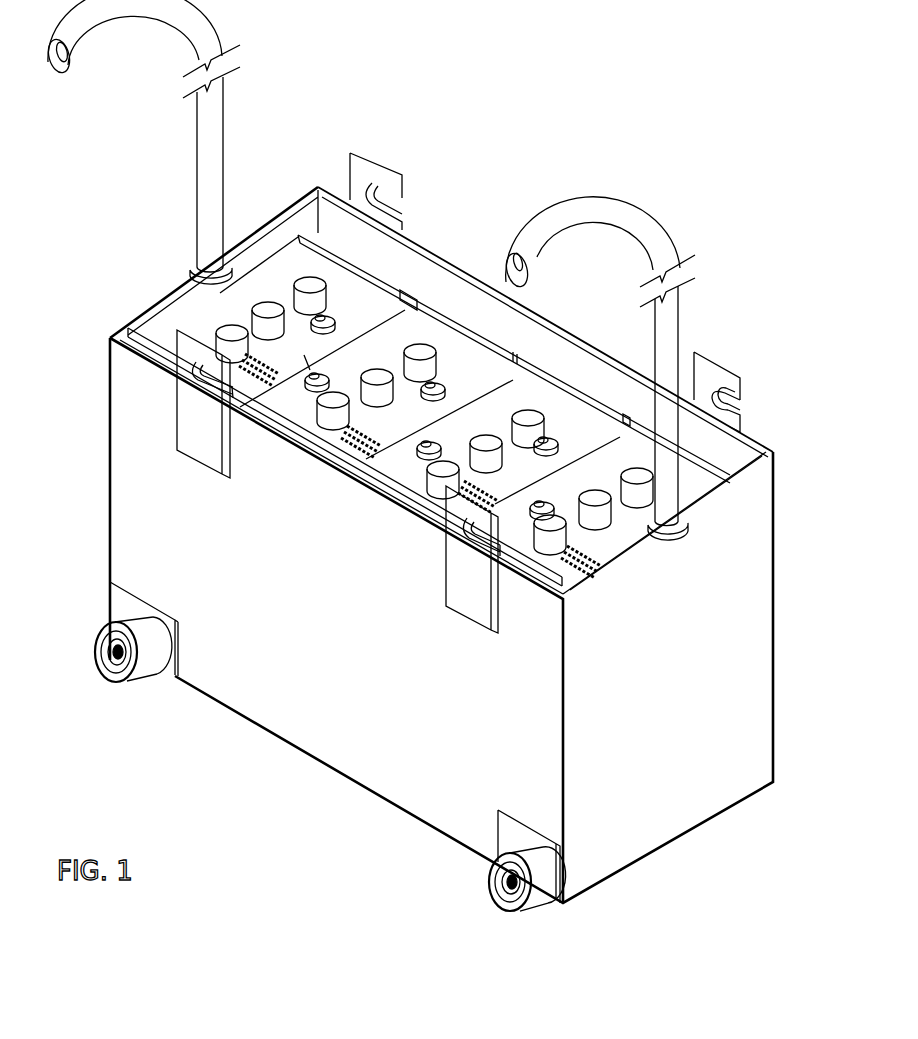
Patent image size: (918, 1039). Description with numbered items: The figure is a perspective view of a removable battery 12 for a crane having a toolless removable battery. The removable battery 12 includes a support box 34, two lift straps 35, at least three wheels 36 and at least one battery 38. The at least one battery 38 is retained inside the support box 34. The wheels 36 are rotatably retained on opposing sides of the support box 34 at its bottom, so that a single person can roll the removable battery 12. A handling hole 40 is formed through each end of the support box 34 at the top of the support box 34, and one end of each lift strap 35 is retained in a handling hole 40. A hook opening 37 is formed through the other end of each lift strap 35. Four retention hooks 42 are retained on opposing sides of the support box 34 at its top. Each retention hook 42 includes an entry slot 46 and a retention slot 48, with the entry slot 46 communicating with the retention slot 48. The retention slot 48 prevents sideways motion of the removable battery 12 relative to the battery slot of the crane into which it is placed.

The removable battery 12 is at (515, 133).
The support box 34 is at (670, 813).
The lift strap 35 is at (223, 140).
The wheel 36 is at (107, 675).
The hook opening 37 is at (70, 65).
The battery 38 is at (413, 326).
The handling hole 40 is at (190, 268).
The retention hook 42 is at (378, 163).
The entry slot 46 is at (737, 405).
The retention slot 48 is at (715, 383).